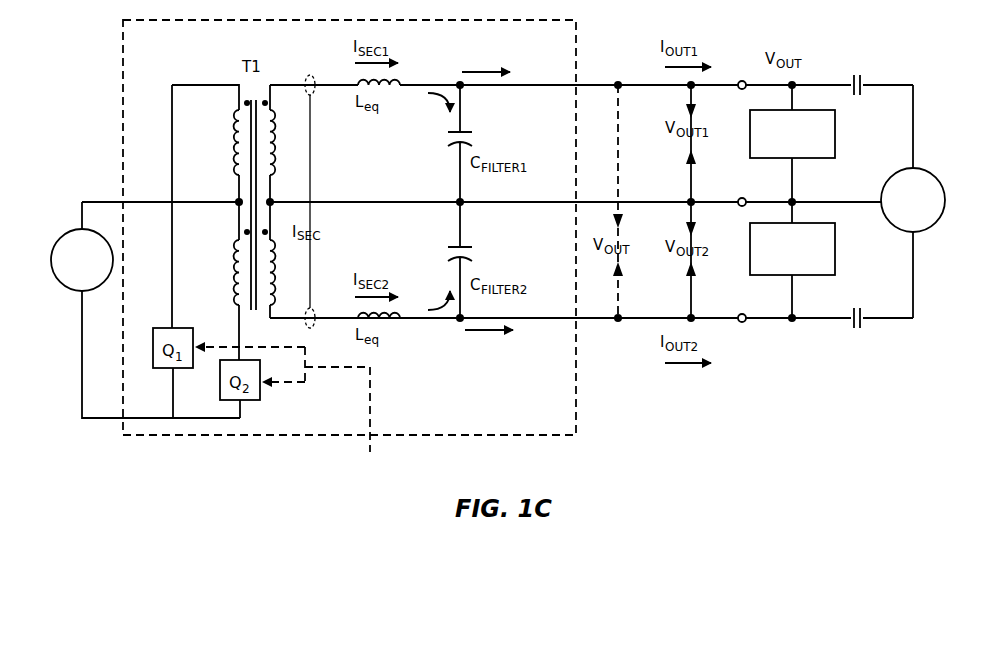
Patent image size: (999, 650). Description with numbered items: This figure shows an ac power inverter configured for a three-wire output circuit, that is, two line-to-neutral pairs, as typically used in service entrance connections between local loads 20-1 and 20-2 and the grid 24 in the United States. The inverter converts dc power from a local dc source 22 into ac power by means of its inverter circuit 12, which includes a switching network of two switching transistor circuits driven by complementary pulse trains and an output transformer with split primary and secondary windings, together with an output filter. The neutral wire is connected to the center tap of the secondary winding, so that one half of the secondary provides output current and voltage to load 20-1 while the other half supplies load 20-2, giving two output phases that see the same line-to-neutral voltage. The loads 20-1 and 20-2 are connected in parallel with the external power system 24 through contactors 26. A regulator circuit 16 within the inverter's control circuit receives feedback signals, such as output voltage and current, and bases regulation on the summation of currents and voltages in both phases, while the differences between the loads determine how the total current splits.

The inverter circuit 12 is at (179, 440).
The regulator circuit 16 is at (359, 438).
The local load 20-1 is at (803, 160).
The local load 20-2 is at (803, 277).
The local dc source 22 is at (67, 286).
The external power system 24 is at (935, 223).
The contactors 26 is at (862, 72).